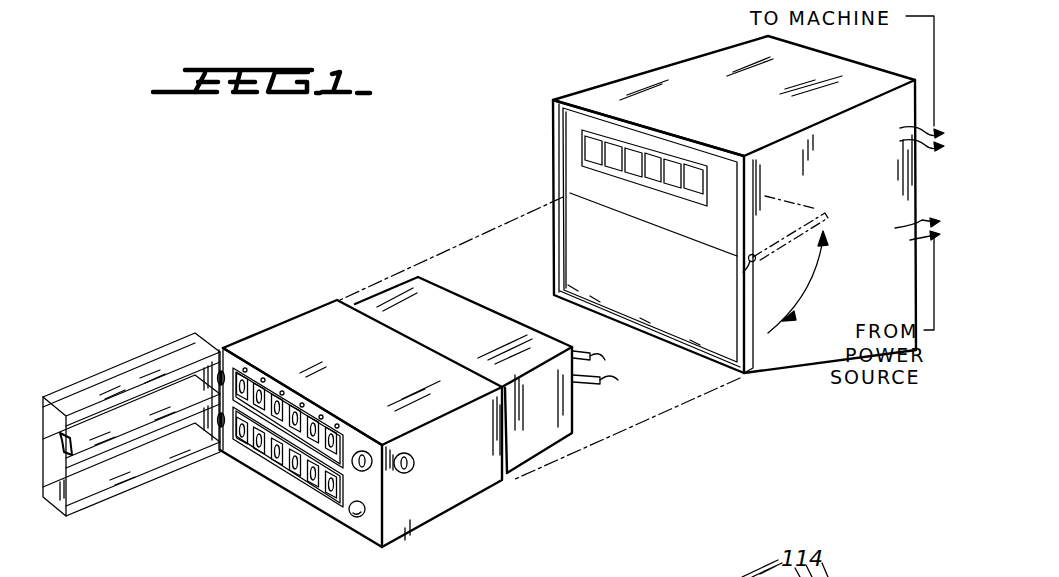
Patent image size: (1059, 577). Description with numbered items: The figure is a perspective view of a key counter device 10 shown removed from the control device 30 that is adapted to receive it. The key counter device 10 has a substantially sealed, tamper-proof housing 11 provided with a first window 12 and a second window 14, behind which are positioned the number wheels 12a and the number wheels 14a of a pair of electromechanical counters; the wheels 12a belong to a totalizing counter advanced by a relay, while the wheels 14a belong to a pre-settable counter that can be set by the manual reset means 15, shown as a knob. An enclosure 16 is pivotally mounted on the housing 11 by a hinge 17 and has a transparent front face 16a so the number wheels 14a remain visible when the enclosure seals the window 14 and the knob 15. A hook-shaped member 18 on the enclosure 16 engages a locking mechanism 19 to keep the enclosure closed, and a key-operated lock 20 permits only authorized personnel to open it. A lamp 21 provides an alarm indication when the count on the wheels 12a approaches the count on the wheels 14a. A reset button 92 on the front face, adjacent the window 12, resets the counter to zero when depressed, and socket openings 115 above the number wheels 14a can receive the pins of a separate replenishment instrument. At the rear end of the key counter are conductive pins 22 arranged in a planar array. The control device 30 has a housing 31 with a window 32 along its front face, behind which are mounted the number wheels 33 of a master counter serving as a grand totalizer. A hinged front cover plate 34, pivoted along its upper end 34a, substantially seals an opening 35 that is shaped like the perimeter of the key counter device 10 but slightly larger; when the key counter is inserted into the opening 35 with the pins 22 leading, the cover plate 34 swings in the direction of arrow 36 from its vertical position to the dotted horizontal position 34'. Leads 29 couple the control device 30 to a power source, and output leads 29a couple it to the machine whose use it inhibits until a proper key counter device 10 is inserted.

The key counter device 10 is at (258, 267).
The housing 11 is at (428, 525).
The first window 12 is at (322, 494).
The number wheels 12a is at (282, 462).
The second window 14 is at (345, 440).
The number wheels 14a is at (280, 392).
The manual reset means 15 is at (262, 380).
The enclosure 16 is at (115, 372).
The transparent front face 16a is at (45, 425).
The hinge 17 is at (224, 348).
The hook-shaped member 18 is at (58, 495).
The locking mechanism 19 is at (368, 452).
The key-operated lock 20 is at (415, 463).
The lamp 21 is at (356, 518).
The conductive pins 22 is at (612, 380).
The leads 29 is at (901, 228).
The output leads 29a is at (897, 136).
The control device 30 is at (670, 48).
The housing 31 is at (862, 190).
The window 32 is at (688, 167).
The number wheels 33 is at (652, 177).
The hinged front cover plate 34 is at (653, 234).
The upper end 34a is at (747, 263).
The horizontal position 34' is at (790, 214).
The opening 35 is at (556, 260).
The arrow 36 is at (812, 291).
The reset button 92 is at (221, 448).
The socket openings 115 is at (328, 420).